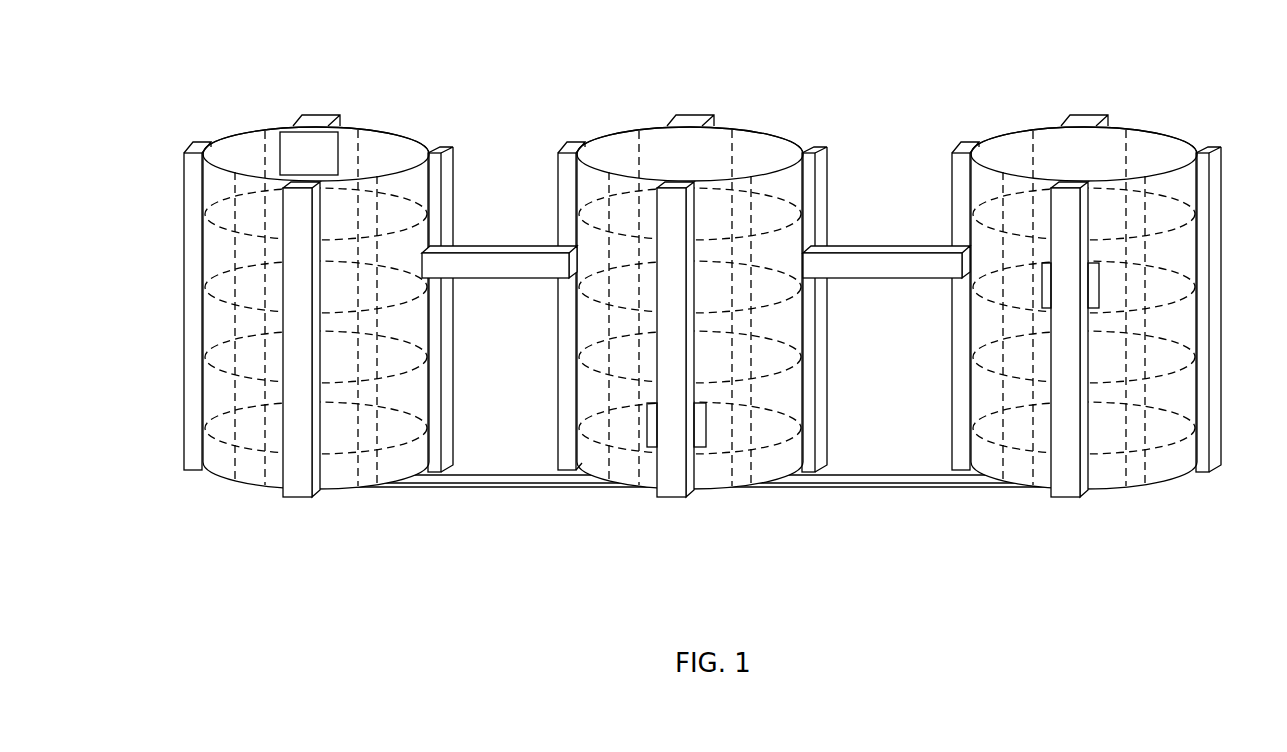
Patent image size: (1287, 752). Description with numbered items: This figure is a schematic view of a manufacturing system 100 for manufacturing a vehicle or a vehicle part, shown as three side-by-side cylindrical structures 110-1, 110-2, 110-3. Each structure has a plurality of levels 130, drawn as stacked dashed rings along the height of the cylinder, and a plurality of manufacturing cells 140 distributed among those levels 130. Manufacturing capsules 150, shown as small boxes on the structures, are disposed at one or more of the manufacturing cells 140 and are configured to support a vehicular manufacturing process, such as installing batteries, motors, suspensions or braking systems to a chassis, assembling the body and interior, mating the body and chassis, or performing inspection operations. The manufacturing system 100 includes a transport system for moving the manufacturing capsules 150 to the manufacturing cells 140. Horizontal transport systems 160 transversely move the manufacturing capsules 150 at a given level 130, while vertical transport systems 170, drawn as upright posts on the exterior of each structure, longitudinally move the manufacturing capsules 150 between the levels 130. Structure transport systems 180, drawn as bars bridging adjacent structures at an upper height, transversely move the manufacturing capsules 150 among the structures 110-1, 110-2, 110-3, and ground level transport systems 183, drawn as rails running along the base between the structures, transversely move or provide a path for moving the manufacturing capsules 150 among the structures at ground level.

The manufacturing system 100 is at (485, 60).
The structure 110-1 is at (238, 130).
The structure 110-2 is at (600, 130).
The structure 110-3 is at (990, 130).
The levels 130 is at (253, 456).
The manufacturing cells 140 is at (217, 252).
The manufacturing capsules 150 is at (290, 130).
The horizontal transport systems 160 is at (210, 413).
The vertical transport systems 170 is at (183, 313).
The structure transport systems 180 is at (521, 246).
The ground level transport systems 183 is at (466, 490).